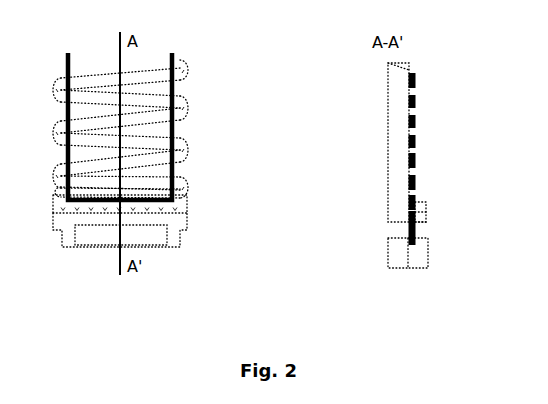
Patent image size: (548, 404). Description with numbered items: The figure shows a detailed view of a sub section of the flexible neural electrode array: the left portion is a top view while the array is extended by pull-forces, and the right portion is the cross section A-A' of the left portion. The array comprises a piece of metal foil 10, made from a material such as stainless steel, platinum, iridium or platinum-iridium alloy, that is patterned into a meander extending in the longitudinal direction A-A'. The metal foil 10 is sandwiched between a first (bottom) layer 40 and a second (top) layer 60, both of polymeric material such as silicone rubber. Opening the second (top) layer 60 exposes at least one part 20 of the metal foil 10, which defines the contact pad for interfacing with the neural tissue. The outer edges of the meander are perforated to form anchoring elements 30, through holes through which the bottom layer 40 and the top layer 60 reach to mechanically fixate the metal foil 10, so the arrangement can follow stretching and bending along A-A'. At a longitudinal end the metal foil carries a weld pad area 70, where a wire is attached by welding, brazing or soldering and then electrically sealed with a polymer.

The metal foil 10 is at (416, 220).
The exposed part of the metal foil 20 is at (153, 139).
The anchoring elements 30 is at (176, 209).
The first (bottom) layer 40 is at (394, 183).
The second (top) layer 60 is at (418, 250).
The weld pad area 70 is at (157, 235).